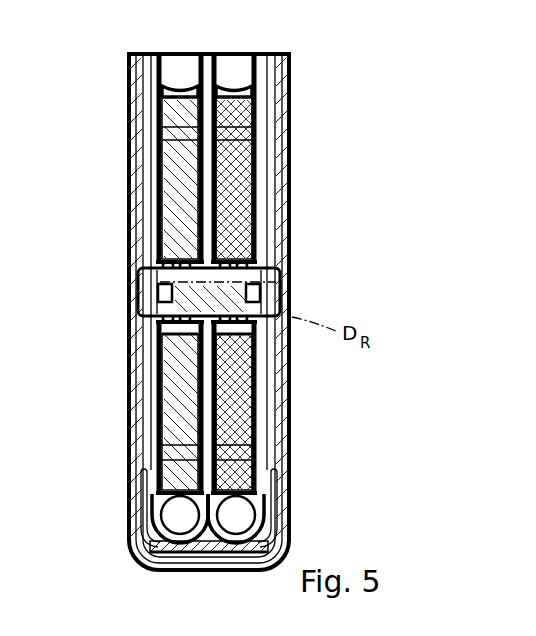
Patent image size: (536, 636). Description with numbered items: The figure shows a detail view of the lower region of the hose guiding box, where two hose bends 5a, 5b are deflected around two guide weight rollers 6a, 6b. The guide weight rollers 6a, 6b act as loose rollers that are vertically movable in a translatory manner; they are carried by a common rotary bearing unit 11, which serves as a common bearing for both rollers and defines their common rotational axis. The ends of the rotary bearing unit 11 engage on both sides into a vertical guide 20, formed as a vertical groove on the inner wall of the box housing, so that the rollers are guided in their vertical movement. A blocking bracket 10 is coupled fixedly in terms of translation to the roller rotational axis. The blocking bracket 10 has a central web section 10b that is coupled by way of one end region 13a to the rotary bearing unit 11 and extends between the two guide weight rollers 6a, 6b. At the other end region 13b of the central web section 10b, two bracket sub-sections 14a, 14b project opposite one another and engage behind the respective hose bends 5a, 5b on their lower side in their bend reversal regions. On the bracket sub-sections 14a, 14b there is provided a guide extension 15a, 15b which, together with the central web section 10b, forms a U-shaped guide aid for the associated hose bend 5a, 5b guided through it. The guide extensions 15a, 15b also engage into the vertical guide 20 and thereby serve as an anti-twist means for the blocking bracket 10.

The hose bend 5a is at (173, 73).
The hose bend 5b is at (247, 75).
The guide weight roller 6a is at (175, 383).
The guide weight roller 6b is at (247, 390).
The blocking bracket 10 is at (207, 347).
The central web section 10b is at (240, 420).
The rotary bearing unit 11 is at (283, 288).
The end region 13a is at (262, 246).
The end region 13b is at (190, 545).
The bracket sub-section 14a is at (162, 540).
The bracket sub-section 14b is at (250, 540).
The guide extension 15a is at (143, 495).
The guide extension 15b is at (275, 488).
The vertical guide 20 is at (146, 445).